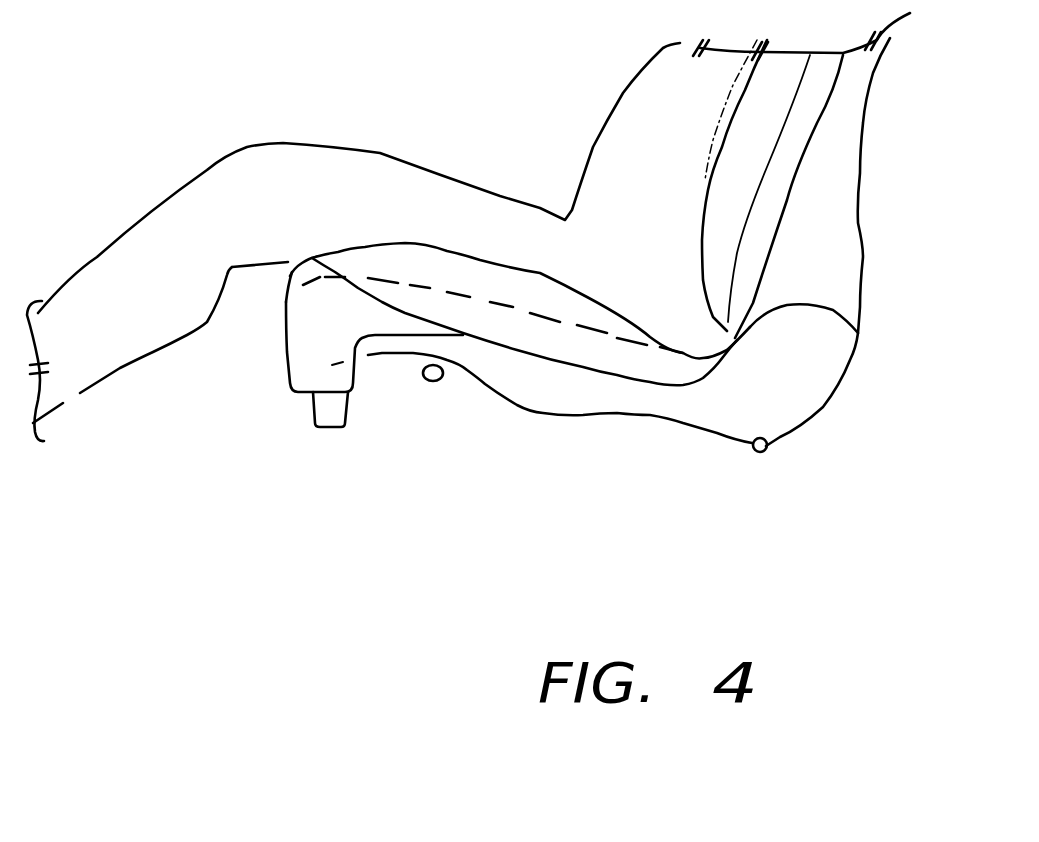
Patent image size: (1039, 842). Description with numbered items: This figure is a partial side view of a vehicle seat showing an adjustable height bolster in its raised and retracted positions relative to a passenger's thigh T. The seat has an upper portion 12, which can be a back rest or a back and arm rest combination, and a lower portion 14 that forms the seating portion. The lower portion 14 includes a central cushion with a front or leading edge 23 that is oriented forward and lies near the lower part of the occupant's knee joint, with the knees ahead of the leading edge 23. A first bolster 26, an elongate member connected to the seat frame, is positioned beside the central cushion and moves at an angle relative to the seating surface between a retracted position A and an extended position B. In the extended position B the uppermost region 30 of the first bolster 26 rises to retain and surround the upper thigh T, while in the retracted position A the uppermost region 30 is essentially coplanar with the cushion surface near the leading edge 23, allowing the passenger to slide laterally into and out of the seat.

The upper portion 12 is at (840, 179).
The lower portion 14 is at (288, 333).
The leading edge 23 is at (290, 292).
The first bolster 26 is at (571, 394).
The uppermost region 30 is at (588, 297).
The retracted position A is at (516, 305).
The extended position B is at (455, 254).
The passenger thigh T is at (429, 191).